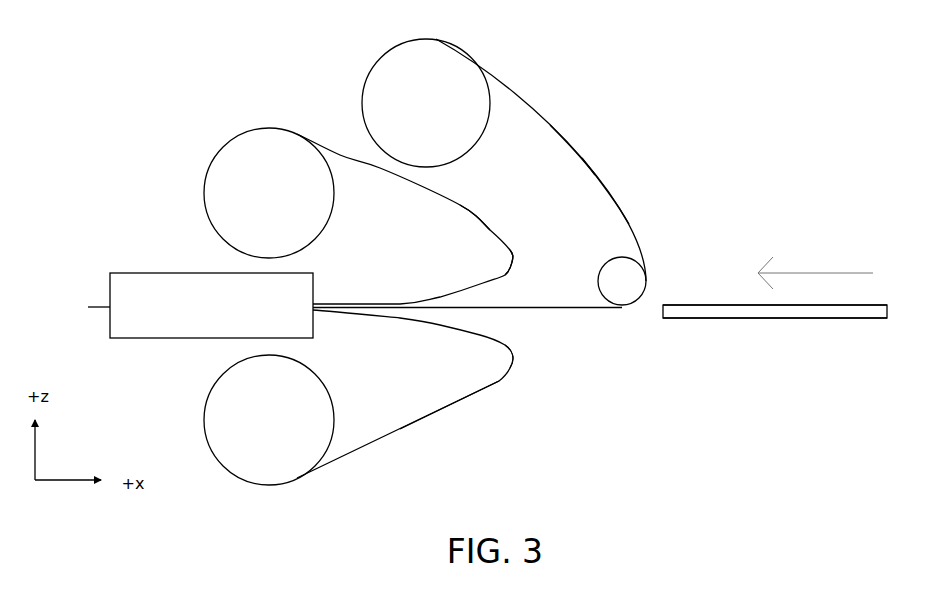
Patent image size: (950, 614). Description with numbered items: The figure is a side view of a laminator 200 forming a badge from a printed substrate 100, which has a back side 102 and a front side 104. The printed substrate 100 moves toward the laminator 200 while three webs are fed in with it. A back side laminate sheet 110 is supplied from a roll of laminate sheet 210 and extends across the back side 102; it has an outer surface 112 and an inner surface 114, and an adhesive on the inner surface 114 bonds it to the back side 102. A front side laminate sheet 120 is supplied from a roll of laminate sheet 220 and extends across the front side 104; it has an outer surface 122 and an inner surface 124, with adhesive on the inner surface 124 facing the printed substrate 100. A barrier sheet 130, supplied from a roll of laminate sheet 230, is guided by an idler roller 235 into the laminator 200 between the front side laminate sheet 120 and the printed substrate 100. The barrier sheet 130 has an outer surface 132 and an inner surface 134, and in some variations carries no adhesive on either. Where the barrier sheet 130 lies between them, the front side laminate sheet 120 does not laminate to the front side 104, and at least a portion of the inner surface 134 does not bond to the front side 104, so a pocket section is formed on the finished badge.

The printed substrate 100 is at (890, 302).
The back side 102 is at (840, 318).
The front side 104 is at (708, 305).
The back side laminate sheet 110 is at (375, 452).
The outer surface 112 is at (487, 380).
The inner surface 114 is at (510, 343).
The front side laminate sheet 120 is at (397, 185).
The outer surface 122 is at (498, 237).
The inner surface 124 is at (512, 267).
The barrier sheet 130 is at (548, 107).
The outer surface 132 is at (568, 147).
The inner surface 134 is at (587, 167).
The laminator 200 is at (146, 266).
The roll of laminate sheet 210 is at (262, 457).
The roll of laminate sheet 220 is at (250, 153).
The roll of laminate sheet 230 is at (435, 60).
The idler roller 235 is at (628, 278).